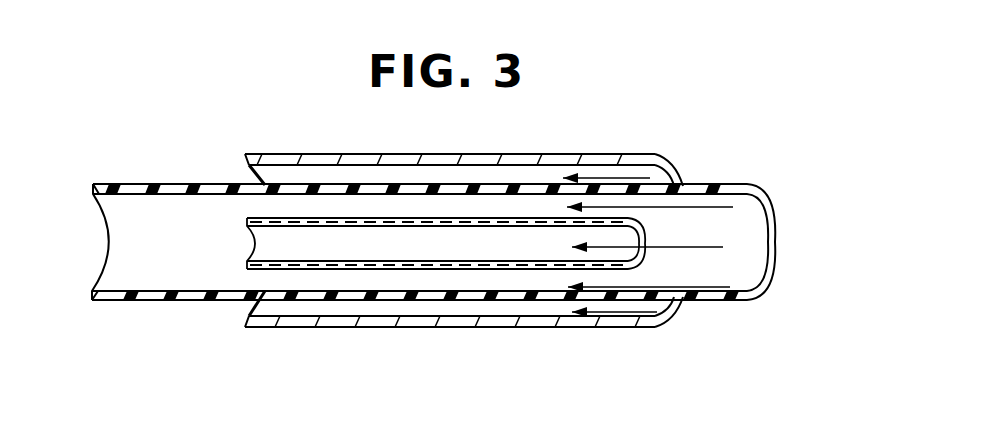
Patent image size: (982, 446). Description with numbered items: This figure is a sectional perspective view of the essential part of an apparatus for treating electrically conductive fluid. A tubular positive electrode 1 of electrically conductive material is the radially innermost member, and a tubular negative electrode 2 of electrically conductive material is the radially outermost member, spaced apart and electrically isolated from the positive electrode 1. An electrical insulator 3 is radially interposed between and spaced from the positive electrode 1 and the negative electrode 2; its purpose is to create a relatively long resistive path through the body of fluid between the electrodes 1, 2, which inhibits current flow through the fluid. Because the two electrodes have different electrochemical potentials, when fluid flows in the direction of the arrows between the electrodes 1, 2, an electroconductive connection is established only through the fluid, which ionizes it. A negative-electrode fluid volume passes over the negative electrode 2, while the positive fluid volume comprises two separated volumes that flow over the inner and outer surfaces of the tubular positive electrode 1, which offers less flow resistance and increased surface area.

The positive electrode 1 is at (262, 248).
The negative electrode 2 is at (670, 166).
The electrical insulator 3 is at (772, 219).